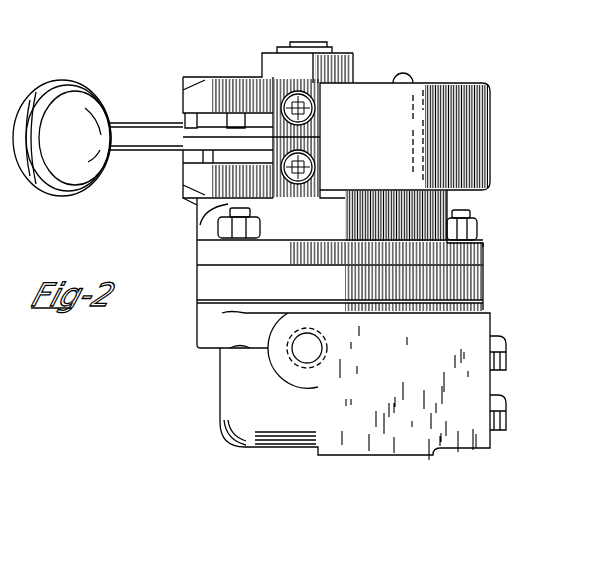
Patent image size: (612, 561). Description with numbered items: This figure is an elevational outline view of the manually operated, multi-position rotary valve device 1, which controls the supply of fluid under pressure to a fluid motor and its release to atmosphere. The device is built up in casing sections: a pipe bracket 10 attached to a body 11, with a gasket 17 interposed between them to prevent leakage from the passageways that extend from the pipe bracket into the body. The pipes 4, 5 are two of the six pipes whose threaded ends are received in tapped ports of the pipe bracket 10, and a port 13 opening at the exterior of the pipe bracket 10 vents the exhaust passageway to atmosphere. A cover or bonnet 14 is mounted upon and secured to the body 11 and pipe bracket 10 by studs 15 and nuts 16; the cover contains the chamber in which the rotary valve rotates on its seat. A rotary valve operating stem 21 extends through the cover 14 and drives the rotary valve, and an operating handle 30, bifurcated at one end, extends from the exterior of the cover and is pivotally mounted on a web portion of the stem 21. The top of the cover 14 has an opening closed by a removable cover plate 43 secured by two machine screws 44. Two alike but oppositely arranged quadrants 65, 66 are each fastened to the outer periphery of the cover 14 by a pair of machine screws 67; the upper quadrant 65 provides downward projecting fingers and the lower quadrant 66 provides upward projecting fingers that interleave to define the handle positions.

The rotary valve device 1 is at (488, 258).
The pipe 4 is at (507, 358).
The pipe 5 is at (505, 427).
The pipe bracket 10 is at (487, 323).
The body 11 is at (484, 284).
The port 13 is at (297, 351).
The cover 14 is at (450, 197).
The stud 15 is at (233, 209).
The nut 16 is at (216, 230).
The gasket 17 is at (484, 303).
The rotary valve operating stem 21 is at (315, 43).
The operating handle 30 is at (150, 127).
The cover plate 43 is at (467, 88).
The machine screw 44 is at (405, 80).
The quadrant 65 is at (187, 95).
The quadrant 66 is at (187, 179).
The machine screw 67 is at (312, 152).